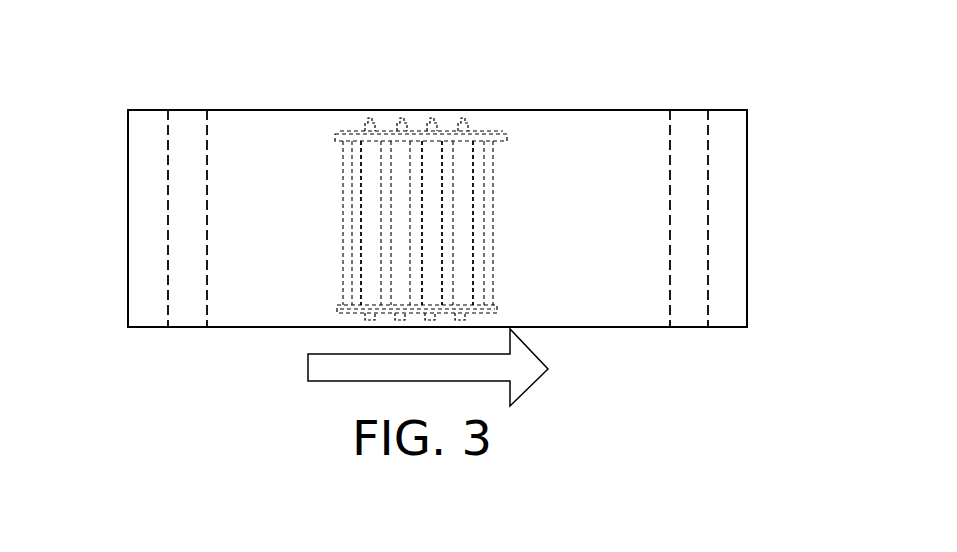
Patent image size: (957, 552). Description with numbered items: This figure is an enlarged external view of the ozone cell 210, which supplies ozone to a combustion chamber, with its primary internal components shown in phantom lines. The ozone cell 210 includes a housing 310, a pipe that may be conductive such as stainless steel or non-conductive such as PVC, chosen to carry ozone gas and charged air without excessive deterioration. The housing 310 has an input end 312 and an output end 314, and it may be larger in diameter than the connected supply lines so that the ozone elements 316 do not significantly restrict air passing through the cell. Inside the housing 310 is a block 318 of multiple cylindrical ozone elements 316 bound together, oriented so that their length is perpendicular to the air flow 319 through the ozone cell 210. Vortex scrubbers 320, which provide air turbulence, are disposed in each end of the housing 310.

The ozone cell 210 is at (492, 98).
The housing 310 is at (357, 90).
The input end 312 is at (128, 173).
The output end 314 is at (747, 177).
The ozone elements 316 is at (473, 157).
The block 318 is at (317, 147).
The air flow 319 is at (314, 382).
The vortex scrubbers 320 is at (183, 110).